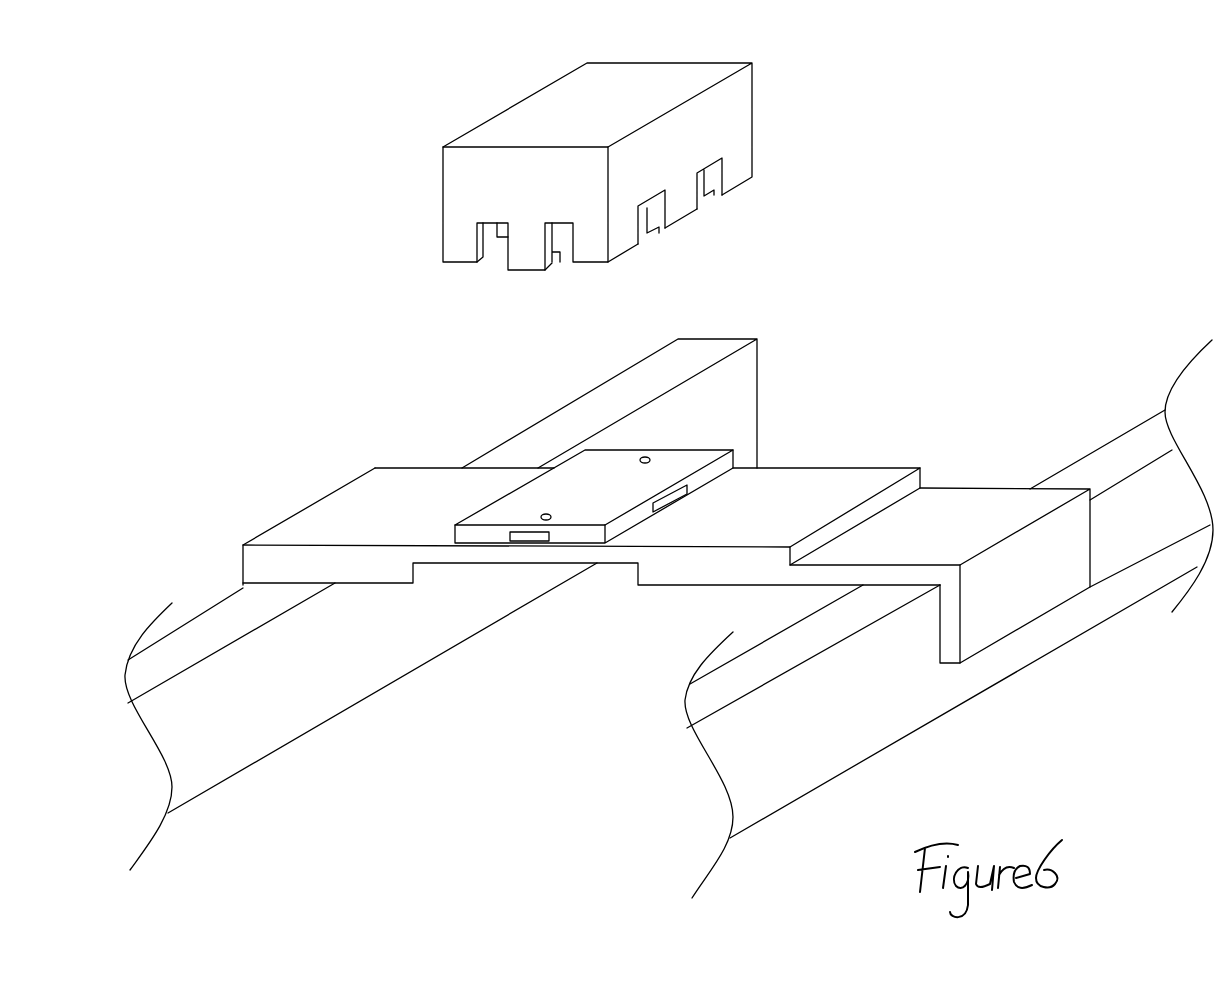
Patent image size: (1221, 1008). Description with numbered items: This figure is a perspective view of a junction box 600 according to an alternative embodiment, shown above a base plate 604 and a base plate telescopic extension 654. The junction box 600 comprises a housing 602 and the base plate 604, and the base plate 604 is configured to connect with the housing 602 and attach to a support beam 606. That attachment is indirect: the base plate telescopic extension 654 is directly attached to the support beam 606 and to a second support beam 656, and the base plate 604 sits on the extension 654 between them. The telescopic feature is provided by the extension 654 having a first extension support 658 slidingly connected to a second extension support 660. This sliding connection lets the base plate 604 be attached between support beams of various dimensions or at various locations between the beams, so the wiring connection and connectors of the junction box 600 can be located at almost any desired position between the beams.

The junction box 600 is at (920, 103).
The housing 602 is at (840, 43).
The base plate 604 is at (703, 460).
The support beam 606 is at (638, 387).
The base plate telescopic extension 654 is at (225, 443).
The second support beam 656 is at (978, 721).
The first extension support 658 is at (430, 680).
The second extension support 660 is at (957, 507).